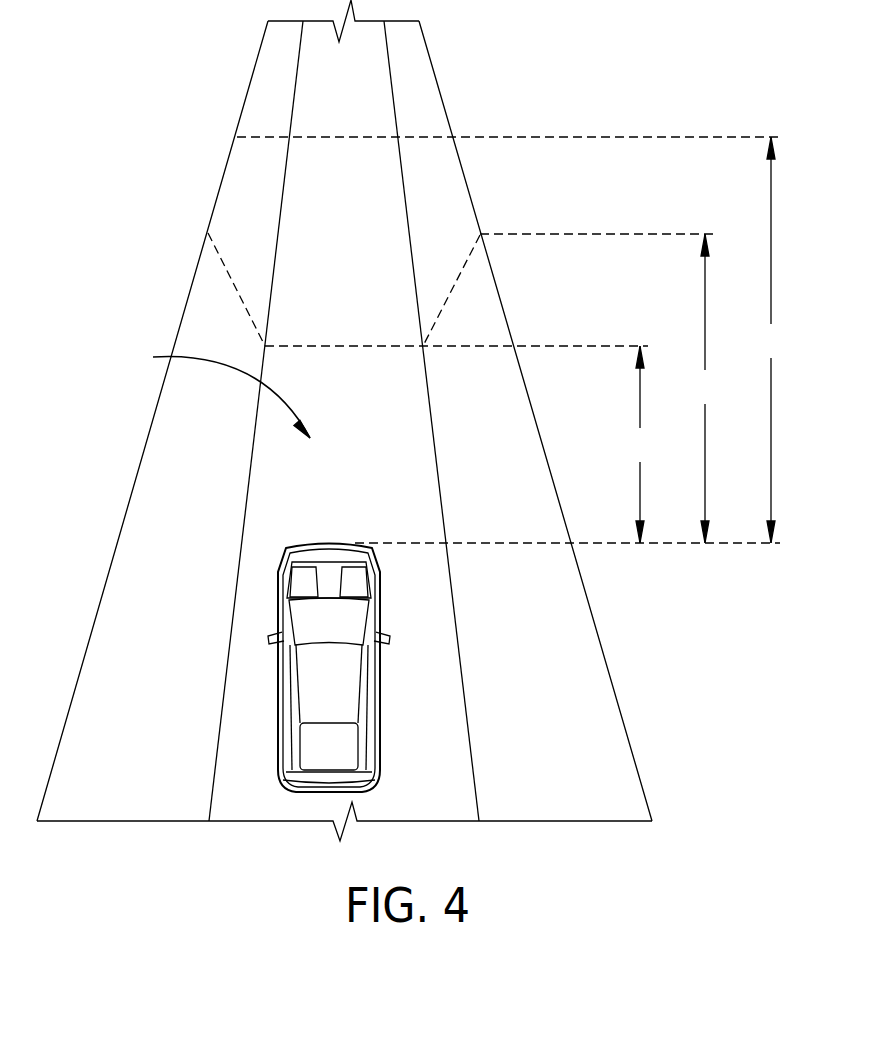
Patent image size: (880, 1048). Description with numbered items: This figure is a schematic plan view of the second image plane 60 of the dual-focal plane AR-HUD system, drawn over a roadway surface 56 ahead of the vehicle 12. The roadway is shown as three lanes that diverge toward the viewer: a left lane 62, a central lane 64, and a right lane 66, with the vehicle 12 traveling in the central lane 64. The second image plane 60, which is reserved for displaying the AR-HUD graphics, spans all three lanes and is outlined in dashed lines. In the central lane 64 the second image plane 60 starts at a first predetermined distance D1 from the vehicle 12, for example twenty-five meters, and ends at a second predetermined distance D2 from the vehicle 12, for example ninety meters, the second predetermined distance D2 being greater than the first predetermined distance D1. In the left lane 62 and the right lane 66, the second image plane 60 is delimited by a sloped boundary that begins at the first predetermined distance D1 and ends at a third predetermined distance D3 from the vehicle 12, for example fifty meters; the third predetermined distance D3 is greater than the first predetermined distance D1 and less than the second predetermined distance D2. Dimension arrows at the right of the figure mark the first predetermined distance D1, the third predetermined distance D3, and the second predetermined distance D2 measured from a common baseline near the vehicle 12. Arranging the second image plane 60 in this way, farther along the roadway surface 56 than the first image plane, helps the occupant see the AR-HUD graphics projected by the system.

The vehicle 12 is at (316, 695).
The roadway surface 56 is at (218, 392).
The second image plane 60 is at (262, 137).
The left lane 62 is at (175, 493).
The central lane 64 is at (400, 503).
The right lane 66 is at (506, 430).
The first predetermined distance D1 is at (640, 444).
The second predetermined distance D2 is at (771, 340).
The third predetermined distance D3 is at (705, 388).